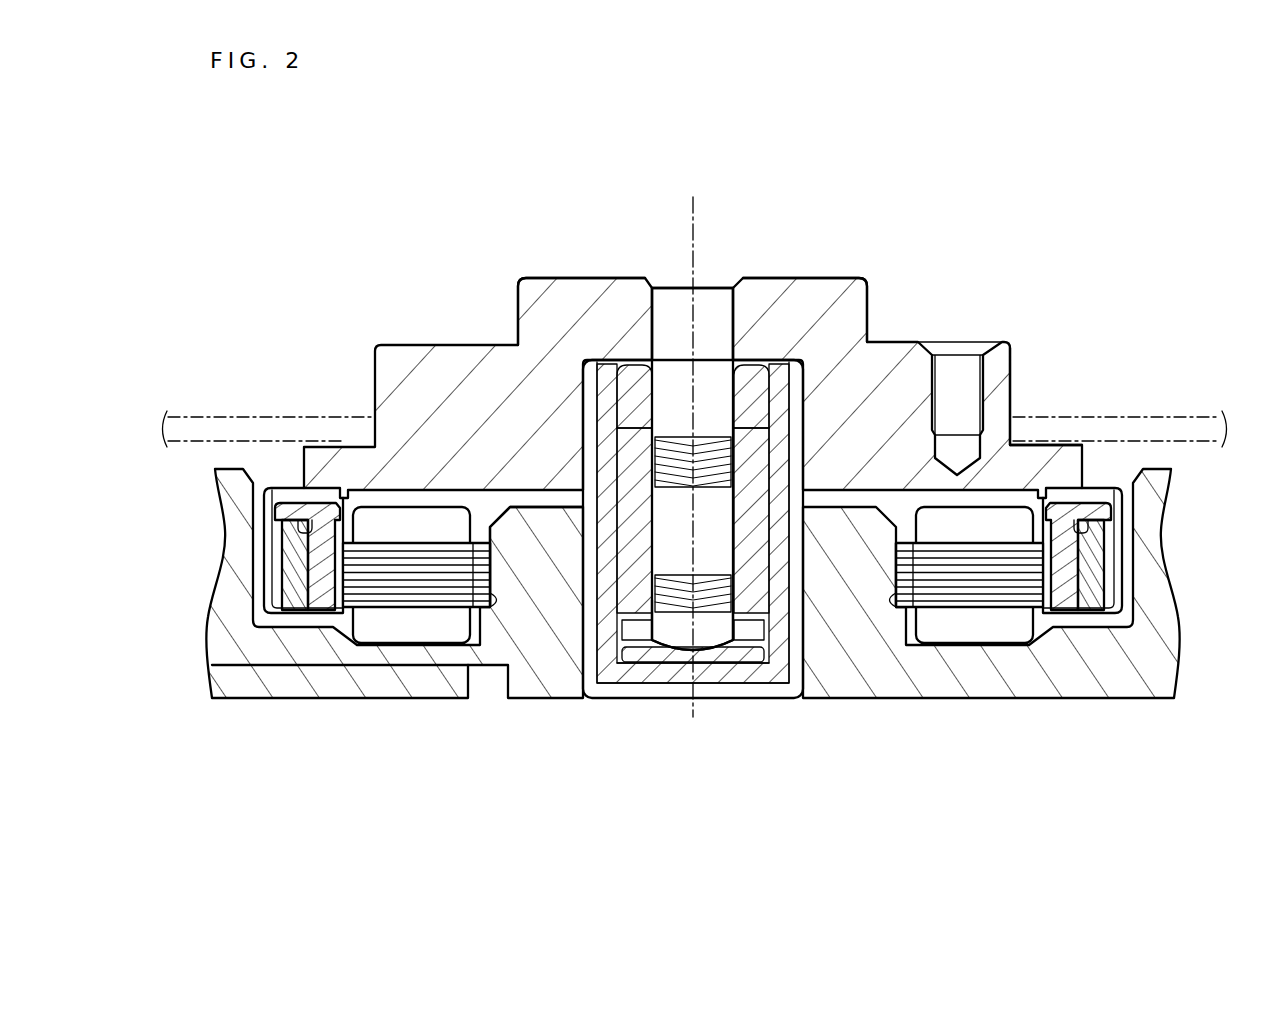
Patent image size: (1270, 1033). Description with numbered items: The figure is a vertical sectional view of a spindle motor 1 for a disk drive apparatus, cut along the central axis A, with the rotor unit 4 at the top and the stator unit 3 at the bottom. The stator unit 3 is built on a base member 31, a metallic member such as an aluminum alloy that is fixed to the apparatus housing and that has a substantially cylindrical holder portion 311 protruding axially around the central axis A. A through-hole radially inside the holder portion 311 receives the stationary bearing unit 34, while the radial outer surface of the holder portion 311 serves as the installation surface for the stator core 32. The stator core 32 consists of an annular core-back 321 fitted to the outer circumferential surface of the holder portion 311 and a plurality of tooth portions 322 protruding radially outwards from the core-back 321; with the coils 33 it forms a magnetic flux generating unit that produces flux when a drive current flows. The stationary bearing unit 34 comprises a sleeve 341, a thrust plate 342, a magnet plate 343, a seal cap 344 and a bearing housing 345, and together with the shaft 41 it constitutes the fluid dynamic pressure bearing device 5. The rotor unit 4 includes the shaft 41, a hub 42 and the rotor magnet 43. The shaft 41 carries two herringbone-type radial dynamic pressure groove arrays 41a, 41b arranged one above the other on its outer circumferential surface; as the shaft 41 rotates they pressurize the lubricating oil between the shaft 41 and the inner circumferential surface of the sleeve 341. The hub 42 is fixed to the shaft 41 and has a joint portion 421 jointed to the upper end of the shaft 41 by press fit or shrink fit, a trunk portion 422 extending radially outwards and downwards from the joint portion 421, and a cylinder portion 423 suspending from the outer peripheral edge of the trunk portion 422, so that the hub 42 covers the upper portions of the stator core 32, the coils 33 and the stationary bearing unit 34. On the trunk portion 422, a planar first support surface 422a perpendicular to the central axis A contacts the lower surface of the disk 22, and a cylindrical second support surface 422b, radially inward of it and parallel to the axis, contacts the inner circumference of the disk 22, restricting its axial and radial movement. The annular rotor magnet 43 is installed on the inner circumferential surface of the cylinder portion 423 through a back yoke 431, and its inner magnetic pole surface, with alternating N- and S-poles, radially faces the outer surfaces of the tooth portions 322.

The spindle motor 1 is at (265, 156).
The central axis A is at (690, 232).
The disk 22 is at (1188, 413).
The stator unit 3 is at (1121, 711).
The base member 31 is at (1078, 698).
The holder portion 311 is at (565, 627).
The stator core 32 is at (372, 768).
The core-back 321 is at (477, 572).
The tooth portions 322 is at (413, 588).
The coils 33 is at (370, 621).
The stationary bearing unit 34 is at (794, 390).
The sleeve 341 is at (751, 562).
The thrust plate 342 is at (733, 558).
The magnet plate 343 is at (655, 652).
The seal cap 344 is at (628, 390).
The bearing housing 345 is at (605, 685).
The rotor unit 4 is at (964, 311).
The shaft 41 is at (707, 303).
The radial dynamic pressure groove array 41a is at (681, 427).
The radial dynamic pressure groove array 41b is at (681, 614).
The hub 42 is at (463, 268).
The joint portion 421 is at (558, 322).
The trunk portion 422 is at (450, 370).
The first support surface 422a is at (1057, 432).
The second support surface 422b is at (1016, 426).
The cylinder portion 423 is at (270, 570).
The rotor magnet 43 is at (1067, 573).
The back yoke 431 is at (1095, 531).
The fluid dynamic pressure bearing device 5 is at (830, 208).